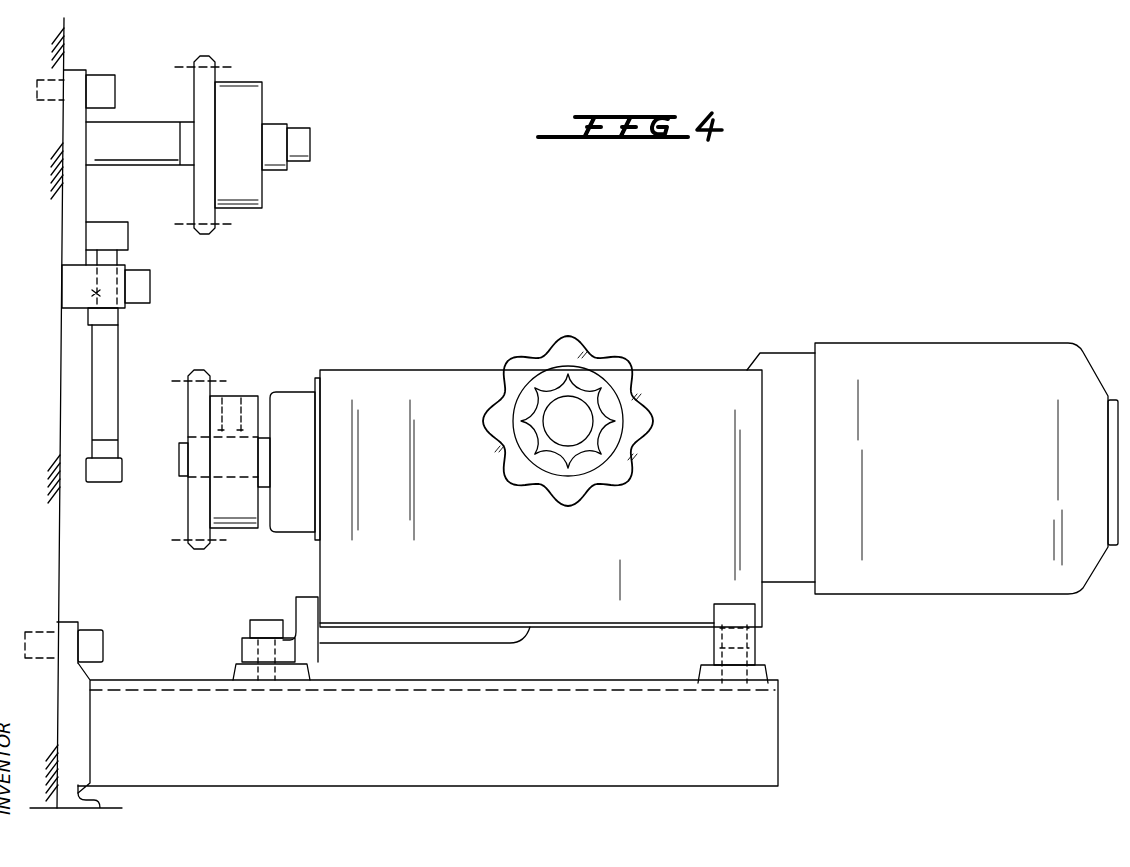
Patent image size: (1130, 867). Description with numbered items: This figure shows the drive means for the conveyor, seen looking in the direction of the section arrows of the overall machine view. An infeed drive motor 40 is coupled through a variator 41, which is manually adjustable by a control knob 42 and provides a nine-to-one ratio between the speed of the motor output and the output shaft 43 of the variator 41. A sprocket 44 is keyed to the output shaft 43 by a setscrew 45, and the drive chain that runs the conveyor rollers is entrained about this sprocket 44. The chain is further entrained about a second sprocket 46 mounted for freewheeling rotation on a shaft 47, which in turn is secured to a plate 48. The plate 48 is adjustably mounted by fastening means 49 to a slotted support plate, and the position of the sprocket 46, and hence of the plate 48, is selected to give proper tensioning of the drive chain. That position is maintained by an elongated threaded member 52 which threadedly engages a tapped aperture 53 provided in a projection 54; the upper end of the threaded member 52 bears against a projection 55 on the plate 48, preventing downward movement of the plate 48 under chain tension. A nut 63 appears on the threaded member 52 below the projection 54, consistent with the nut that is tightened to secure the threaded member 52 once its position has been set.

The infeed drive motor 40 is at (968, 482).
The variator 41 is at (575, 565).
The control knob 42 is at (600, 345).
The output shaft 43 is at (180, 458).
The sprocket 44 is at (188, 515).
The setscrew 45 is at (237, 398).
The sprocket 46 is at (196, 183).
The shaft 47 is at (147, 122).
The plate 48 is at (62, 195).
The fastening means 49 is at (108, 76).
The elongated threaded member 52 is at (120, 405).
The tapped aperture 53 is at (90, 292).
The projection 54 is at (62, 283).
The projection 55 is at (128, 238).
The nut 63 is at (125, 318).